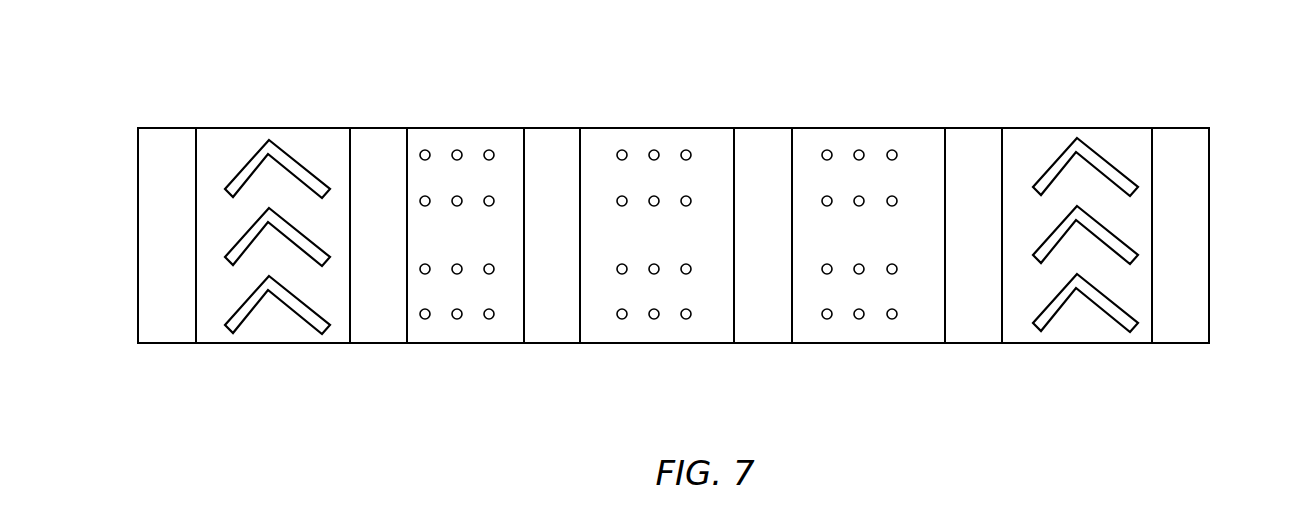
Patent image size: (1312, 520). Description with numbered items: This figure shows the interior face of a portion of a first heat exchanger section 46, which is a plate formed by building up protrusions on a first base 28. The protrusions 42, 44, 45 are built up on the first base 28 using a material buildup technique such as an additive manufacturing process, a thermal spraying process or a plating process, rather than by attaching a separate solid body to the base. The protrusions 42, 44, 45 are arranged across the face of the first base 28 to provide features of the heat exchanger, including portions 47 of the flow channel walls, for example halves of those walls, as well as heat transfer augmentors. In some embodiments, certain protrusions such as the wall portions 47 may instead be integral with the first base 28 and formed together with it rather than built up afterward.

The first base 28 is at (1105, 343).
The protrusion 42 is at (674, 234).
The protrusion 44 is at (425, 150).
The protrusion 45 is at (255, 162).
The first heat exchanger section 46 is at (1205, 99).
The portion of flow channel wall 47 is at (158, 127).